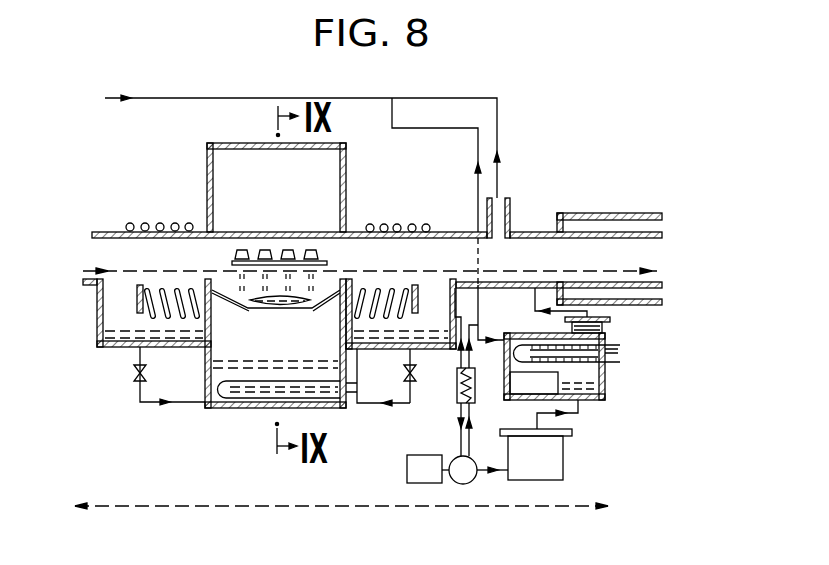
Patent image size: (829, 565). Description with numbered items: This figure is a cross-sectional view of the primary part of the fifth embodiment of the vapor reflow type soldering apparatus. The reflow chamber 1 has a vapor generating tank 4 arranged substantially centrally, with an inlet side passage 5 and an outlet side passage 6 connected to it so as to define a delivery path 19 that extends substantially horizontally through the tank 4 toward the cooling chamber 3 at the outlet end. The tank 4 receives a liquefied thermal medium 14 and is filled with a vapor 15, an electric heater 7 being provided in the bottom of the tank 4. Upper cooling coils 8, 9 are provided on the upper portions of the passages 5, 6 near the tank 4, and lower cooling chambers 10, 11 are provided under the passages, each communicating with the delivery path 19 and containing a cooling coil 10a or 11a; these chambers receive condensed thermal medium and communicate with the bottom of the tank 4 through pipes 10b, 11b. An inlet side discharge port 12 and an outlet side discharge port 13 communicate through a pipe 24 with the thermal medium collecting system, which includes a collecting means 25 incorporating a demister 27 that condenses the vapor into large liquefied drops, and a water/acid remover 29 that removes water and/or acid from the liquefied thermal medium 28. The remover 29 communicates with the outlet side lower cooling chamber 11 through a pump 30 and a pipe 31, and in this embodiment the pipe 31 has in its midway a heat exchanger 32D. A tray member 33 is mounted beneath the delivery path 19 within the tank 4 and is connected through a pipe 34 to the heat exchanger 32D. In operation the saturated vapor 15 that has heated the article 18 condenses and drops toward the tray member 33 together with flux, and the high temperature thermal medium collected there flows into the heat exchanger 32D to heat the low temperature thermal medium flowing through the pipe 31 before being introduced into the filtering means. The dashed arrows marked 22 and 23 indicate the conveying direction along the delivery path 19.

The reflow chamber 1 is at (257, 165).
The cooling chamber 3 is at (618, 213).
The vapor generating tank 4 is at (207, 176).
The inlet side passage 5 is at (172, 222).
The outlet side passage 6 is at (371, 223).
The electric heater 7 is at (275, 366).
The upper cooling coil 8 is at (128, 222).
The upper cooling coil 9 is at (386, 223).
The lower cooling chamber 10 is at (129, 332).
The cooling coil 10a is at (150, 318).
The pipe 10b is at (146, 404).
The lower cooling chamber 11 is at (401, 341).
The cooling coil 11a is at (428, 376).
The pipe 11b is at (390, 410).
The inlet side discharge port 12 is at (282, 140).
The outlet side discharge port 13 is at (511, 216).
The liquefied thermal medium 14 is at (223, 403).
The vapor 15 is at (250, 247).
The article 18 is at (332, 261).
The delivery path 19 is at (440, 255).
The conveying direction 22 is at (348, 387).
The conveying direction 23 is at (386, 391).
The pipe 24 is at (416, 128).
The collecting means 25 is at (587, 366).
The demister 27 is at (617, 334).
The liquefied thermal medium 28 is at (596, 401).
The water/acid remover 29 is at (565, 471).
The pump 30 is at (461, 485).
The pipe 31 is at (468, 442).
The heat exchanger 32D is at (456, 394).
The tray member 33 is at (222, 295).
The pipe 34 is at (480, 368).